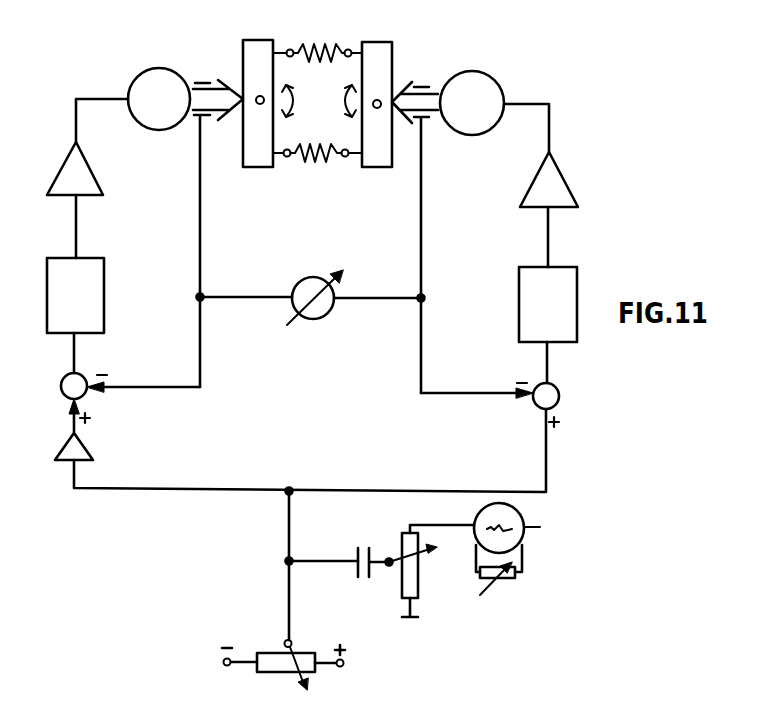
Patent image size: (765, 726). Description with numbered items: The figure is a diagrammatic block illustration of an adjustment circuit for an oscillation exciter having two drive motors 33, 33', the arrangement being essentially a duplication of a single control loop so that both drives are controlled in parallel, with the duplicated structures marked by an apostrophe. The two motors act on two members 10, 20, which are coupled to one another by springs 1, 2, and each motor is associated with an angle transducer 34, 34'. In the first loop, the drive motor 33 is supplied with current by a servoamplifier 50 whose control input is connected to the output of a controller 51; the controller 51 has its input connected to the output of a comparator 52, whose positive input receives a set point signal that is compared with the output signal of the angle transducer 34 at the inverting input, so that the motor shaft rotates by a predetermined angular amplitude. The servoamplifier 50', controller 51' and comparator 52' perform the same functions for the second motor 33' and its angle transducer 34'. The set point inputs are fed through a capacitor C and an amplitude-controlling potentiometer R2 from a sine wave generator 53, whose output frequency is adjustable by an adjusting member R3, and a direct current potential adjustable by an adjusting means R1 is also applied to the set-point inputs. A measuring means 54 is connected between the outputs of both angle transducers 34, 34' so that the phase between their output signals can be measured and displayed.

The upper spring 1 is at (307, 50).
The lower spring 2 is at (307, 143).
The first member 10 is at (243, 60).
The second member 20 is at (395, 63).
The drive motor 33 is at (159, 67).
The drive motor 33' is at (472, 72).
The angle transducer 34 is at (208, 128).
The angle transducer 34' is at (428, 130).
The servoamplifier 50 is at (87, 168).
The servoamplifier 50' is at (566, 179).
The controller 51 is at (75, 295).
The controller 51' is at (548, 304).
The comparator 52 is at (109, 416).
The comparator 52' is at (515, 405).
The sine wave generator 53 is at (540, 527).
The measuring means 54 is at (322, 310).
The capacitor C is at (373, 545).
The adjusting means R1 is at (283, 657).
The amplitude-controlling potentiometer R2 is at (430, 571).
The adjusting member R3 is at (499, 588).